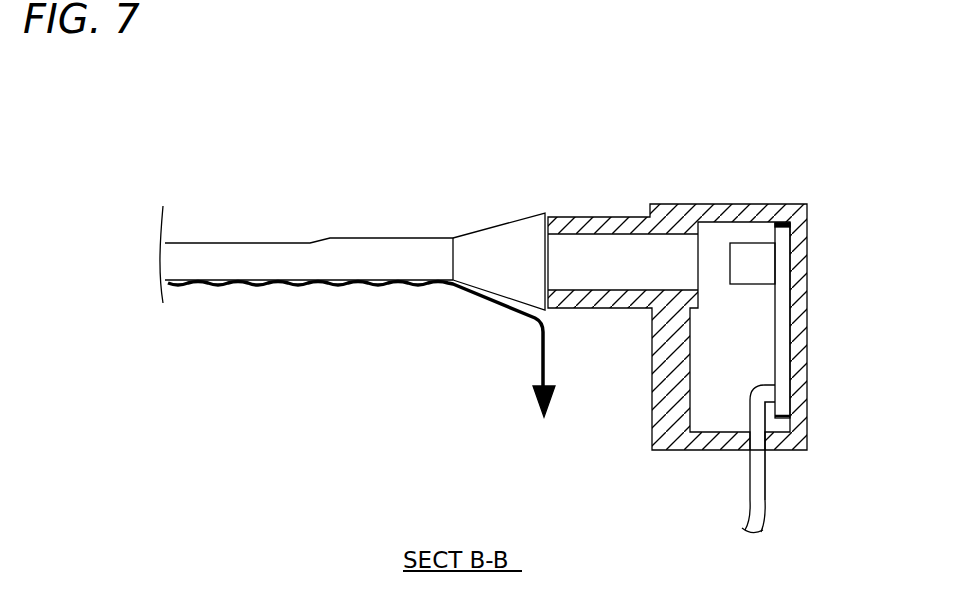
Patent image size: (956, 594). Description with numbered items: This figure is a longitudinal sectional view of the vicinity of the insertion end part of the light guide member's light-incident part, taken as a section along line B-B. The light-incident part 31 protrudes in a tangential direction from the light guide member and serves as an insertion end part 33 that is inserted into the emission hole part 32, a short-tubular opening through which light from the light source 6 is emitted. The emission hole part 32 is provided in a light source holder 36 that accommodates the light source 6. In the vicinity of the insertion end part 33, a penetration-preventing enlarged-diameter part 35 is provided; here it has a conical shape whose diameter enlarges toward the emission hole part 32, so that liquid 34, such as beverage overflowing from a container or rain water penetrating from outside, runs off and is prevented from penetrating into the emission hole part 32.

The light-incident part 31 is at (409, 257).
The penetration-preventing enlarged-diameter part 35 is at (485, 229).
The emission hole part 32 is at (593, 240).
The insertion end part 33 is at (624, 263).
The light source 6 is at (763, 243).
The light source holder 36 is at (808, 303).
The liquid 34 is at (543, 357).